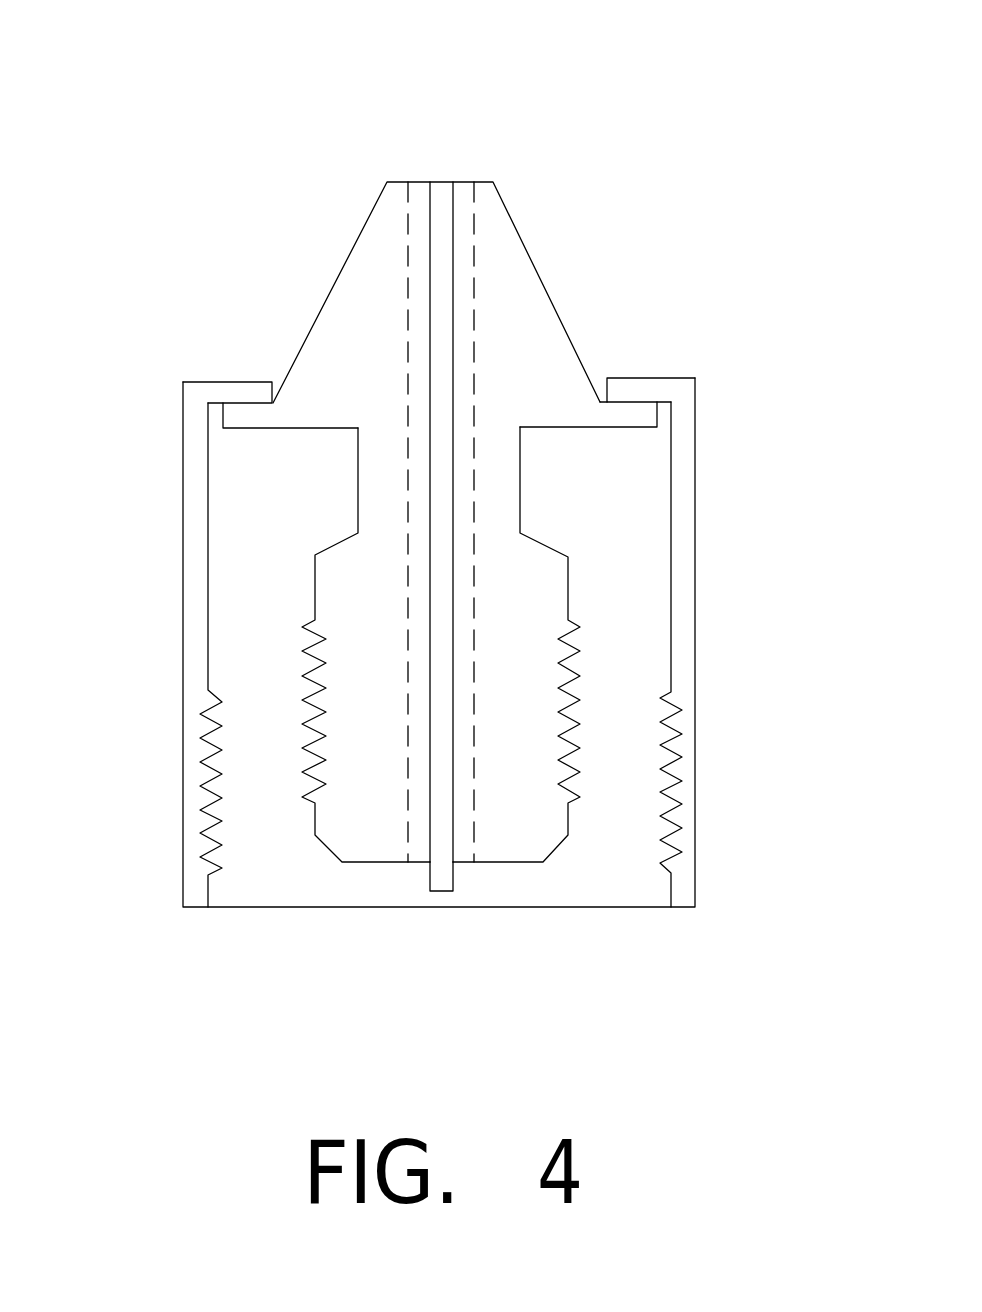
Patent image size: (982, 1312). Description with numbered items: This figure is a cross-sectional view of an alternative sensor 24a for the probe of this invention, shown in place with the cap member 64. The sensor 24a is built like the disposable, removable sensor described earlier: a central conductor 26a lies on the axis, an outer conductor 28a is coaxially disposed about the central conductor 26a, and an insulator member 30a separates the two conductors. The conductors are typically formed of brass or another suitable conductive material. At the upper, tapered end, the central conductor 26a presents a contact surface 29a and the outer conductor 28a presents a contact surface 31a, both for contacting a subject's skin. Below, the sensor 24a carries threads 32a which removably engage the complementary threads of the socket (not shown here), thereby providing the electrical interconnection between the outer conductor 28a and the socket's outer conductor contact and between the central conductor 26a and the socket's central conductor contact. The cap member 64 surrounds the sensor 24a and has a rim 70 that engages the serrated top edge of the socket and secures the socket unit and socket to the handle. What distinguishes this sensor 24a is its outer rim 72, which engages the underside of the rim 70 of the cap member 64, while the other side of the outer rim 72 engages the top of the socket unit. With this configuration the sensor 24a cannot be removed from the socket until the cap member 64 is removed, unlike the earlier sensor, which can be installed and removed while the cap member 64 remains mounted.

The sensor 24a is at (676, 247).
The central conductor 26a is at (448, 891).
The outer conductor 28a is at (358, 240).
The contact surface 29a is at (445, 182).
The insulator member 30a is at (415, 182).
The contact surface 31a is at (478, 182).
The threads 32a is at (577, 672).
The cap member 64 is at (695, 527).
The rim 70 is at (195, 380).
The outer rim 72 is at (250, 428).